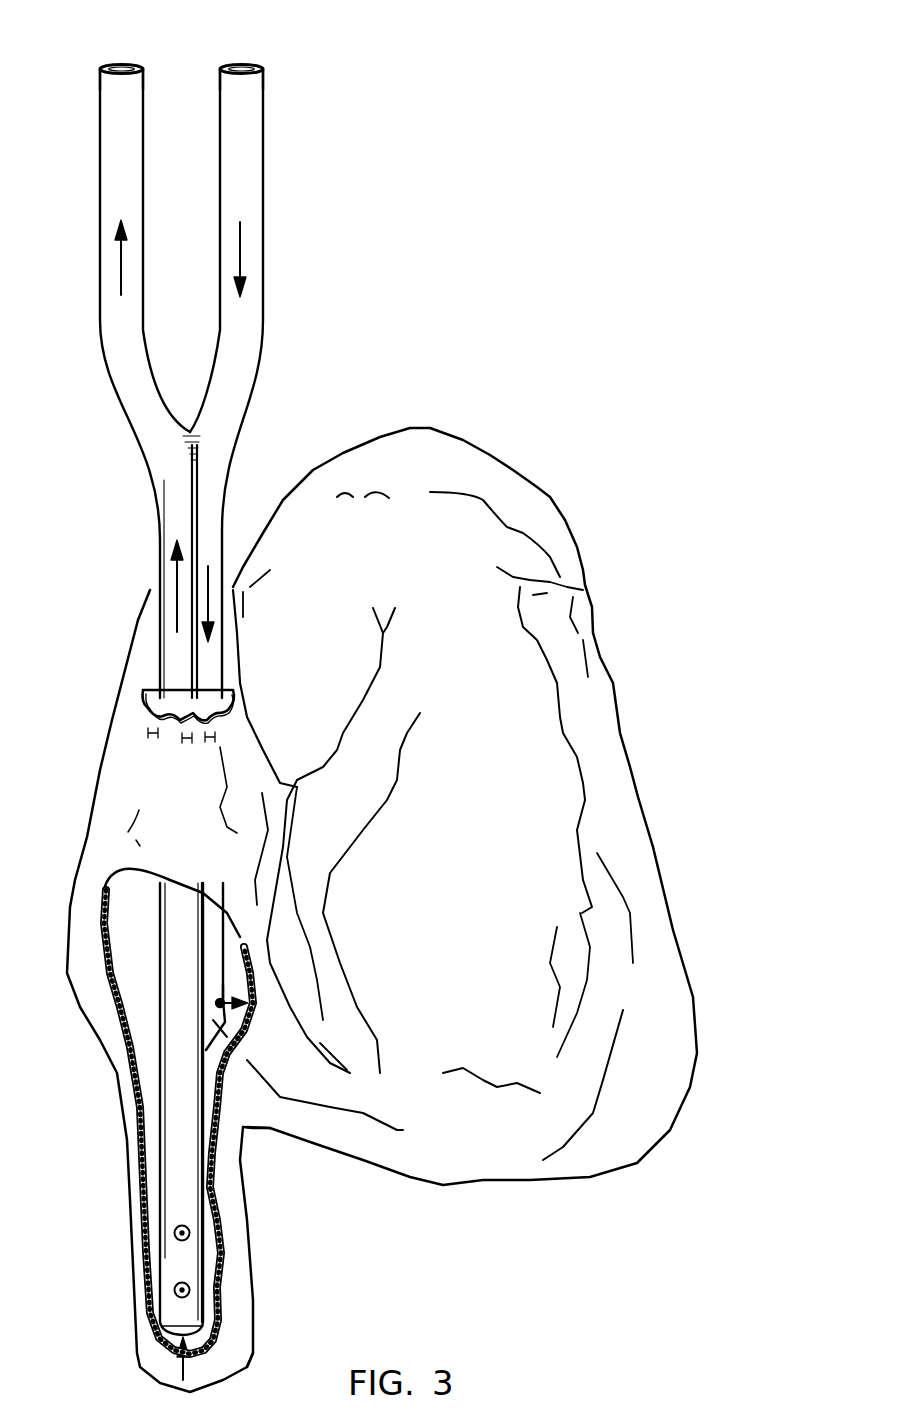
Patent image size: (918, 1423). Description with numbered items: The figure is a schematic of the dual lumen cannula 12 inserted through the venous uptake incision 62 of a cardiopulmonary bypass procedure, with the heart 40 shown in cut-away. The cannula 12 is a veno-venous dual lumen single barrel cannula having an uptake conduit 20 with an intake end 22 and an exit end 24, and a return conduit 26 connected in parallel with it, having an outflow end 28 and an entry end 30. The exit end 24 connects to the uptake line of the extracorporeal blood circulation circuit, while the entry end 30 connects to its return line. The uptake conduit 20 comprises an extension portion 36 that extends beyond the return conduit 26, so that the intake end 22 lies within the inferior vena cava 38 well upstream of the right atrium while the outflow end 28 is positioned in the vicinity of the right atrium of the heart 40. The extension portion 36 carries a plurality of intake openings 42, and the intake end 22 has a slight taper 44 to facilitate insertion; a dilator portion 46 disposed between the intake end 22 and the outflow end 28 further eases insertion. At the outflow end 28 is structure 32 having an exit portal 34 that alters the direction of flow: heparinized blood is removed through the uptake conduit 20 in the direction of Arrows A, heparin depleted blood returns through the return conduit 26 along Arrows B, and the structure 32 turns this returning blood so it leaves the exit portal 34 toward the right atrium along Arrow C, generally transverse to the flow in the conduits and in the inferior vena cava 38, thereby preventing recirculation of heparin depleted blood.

The cannula 12 is at (240, 478).
The uptake conduit 20 is at (115, 137).
The intake end 22 is at (162, 1335).
The exit end 24 is at (118, 66).
The return conduit 26 is at (247, 145).
The outflow end 28 is at (212, 985).
The entry end 30 is at (240, 66).
The structure 32 is at (243, 1045).
The exit portal 34 is at (215, 1005).
The extension portion 36 is at (183, 1185).
The inferior vena cava 38 is at (240, 1307).
The heart 40 is at (483, 862).
The intake openings 42 is at (175, 1290).
The taper 44 is at (253, 1367).
The dilator portion 46 is at (243, 1128).
The venous uptake incision 62 is at (187, 718).